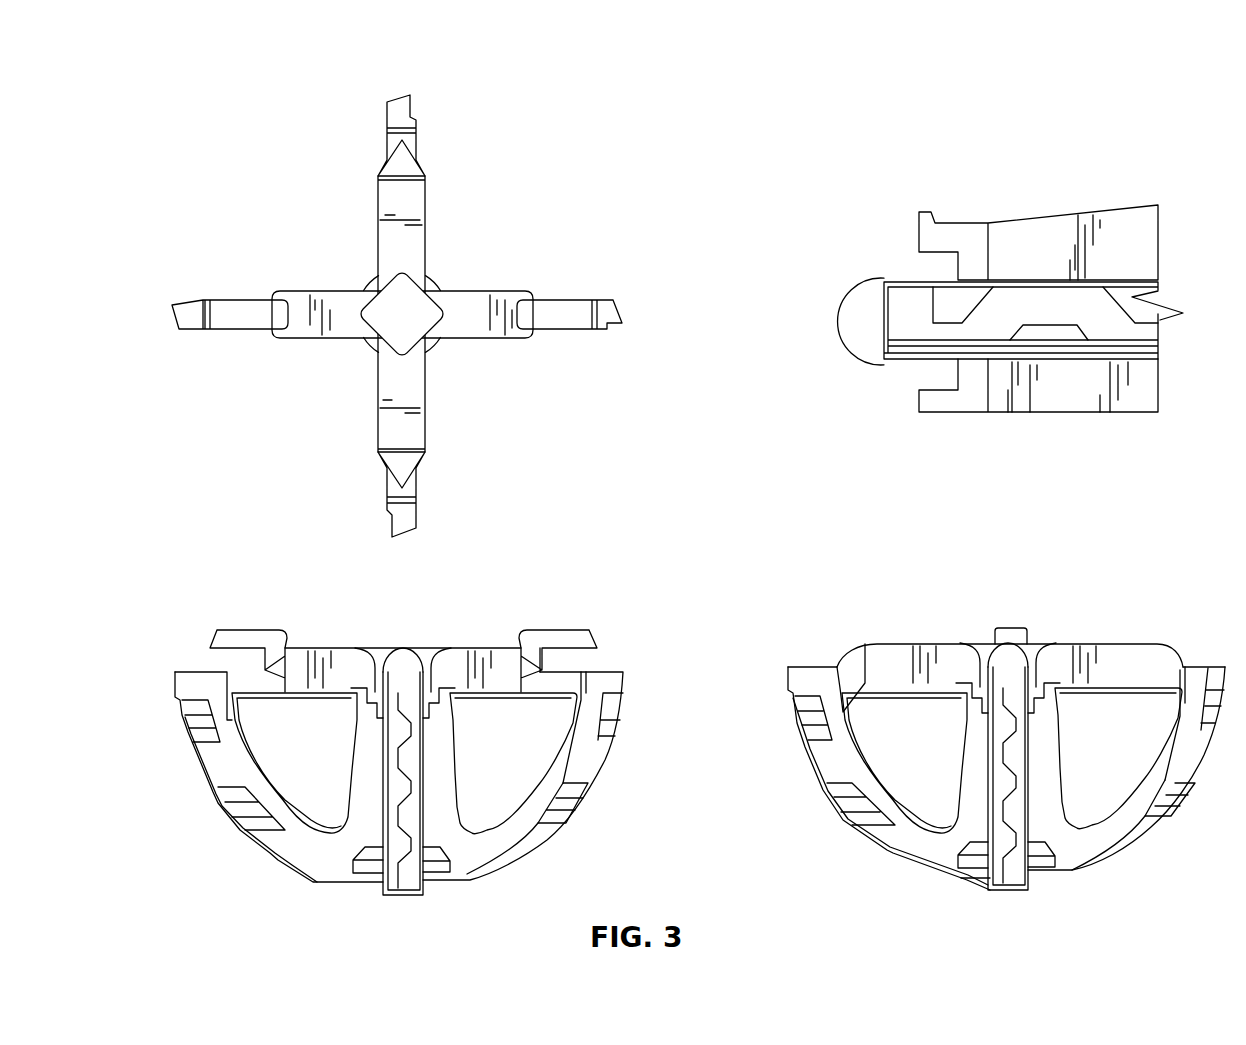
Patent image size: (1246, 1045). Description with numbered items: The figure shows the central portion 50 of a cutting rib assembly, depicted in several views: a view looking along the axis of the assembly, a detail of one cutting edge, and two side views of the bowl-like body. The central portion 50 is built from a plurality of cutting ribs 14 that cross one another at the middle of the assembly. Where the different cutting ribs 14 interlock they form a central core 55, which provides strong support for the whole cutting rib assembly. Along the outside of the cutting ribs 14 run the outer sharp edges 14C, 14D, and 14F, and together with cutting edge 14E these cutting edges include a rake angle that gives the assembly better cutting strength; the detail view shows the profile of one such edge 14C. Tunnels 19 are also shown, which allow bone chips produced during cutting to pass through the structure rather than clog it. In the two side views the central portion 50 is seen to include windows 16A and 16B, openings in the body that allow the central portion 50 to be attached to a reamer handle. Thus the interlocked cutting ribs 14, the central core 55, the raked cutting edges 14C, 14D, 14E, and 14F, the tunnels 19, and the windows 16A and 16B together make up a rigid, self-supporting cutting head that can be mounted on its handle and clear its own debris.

The central portion 50 is at (206, 56).
The cutting ribs 14 is at (362, 349).
The outer sharp edge 14C is at (397, 105).
The outer sharp edge 14D is at (473, 301).
The cutting edge 14E is at (572, 802).
The outer sharp edge 14F is at (193, 311).
The central core 55 is at (402, 332).
The tunnels 19 is at (1140, 307).
The window 16A is at (898, 708).
The window 16B is at (508, 715).